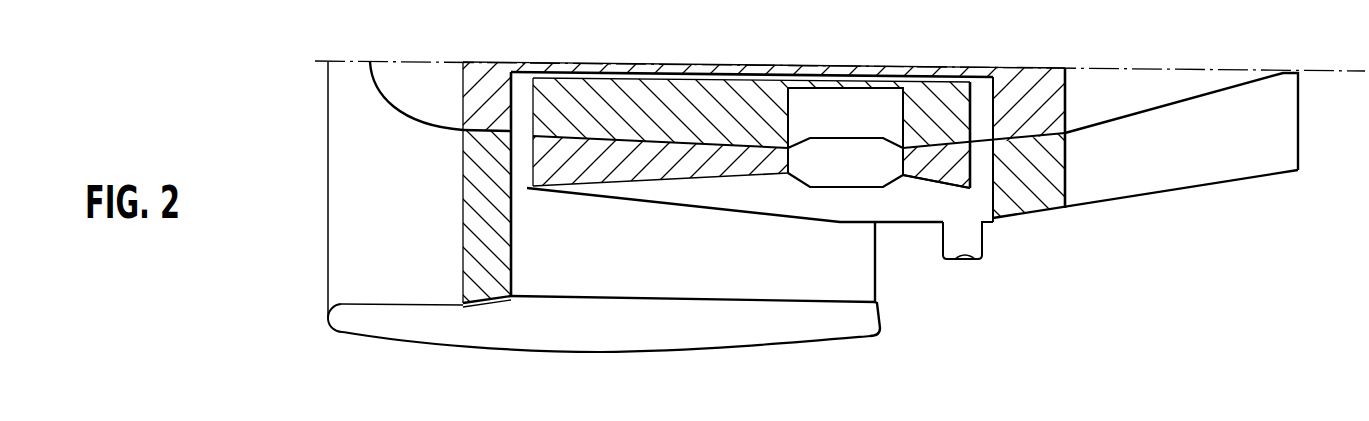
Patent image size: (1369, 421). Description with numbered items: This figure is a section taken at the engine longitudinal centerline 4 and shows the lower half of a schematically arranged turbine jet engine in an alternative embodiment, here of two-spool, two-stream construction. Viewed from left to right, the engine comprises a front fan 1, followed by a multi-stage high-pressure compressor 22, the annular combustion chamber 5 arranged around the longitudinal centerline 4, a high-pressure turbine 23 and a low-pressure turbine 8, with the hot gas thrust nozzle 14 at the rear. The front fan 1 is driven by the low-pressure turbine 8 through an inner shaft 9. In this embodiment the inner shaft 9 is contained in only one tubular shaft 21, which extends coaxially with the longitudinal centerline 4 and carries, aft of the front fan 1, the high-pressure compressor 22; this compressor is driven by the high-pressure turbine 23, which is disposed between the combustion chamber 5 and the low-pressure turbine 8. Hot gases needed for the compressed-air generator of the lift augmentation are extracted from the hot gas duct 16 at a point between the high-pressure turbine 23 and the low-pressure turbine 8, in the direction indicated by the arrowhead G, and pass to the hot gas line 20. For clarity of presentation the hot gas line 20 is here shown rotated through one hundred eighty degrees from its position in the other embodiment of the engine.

The longitudinal centerline 4 is at (340, 62).
The inner shaft 9 is at (521, 76).
The front fan 1 is at (484, 219).
The tubular shaft 21 is at (842, 92).
The combustion chamber 5 is at (820, 168).
The multi-stage high-pressure compressor 22 is at (632, 172).
The high-pressure turbine 23 is at (943, 165).
The arrowhead G is at (982, 148).
The hot gas line 20 is at (984, 239).
The hot gas duct 16 is at (995, 148).
The low-pressure turbine 8 is at (1033, 182).
The hot gas thrust nozzle 14 is at (1300, 127).